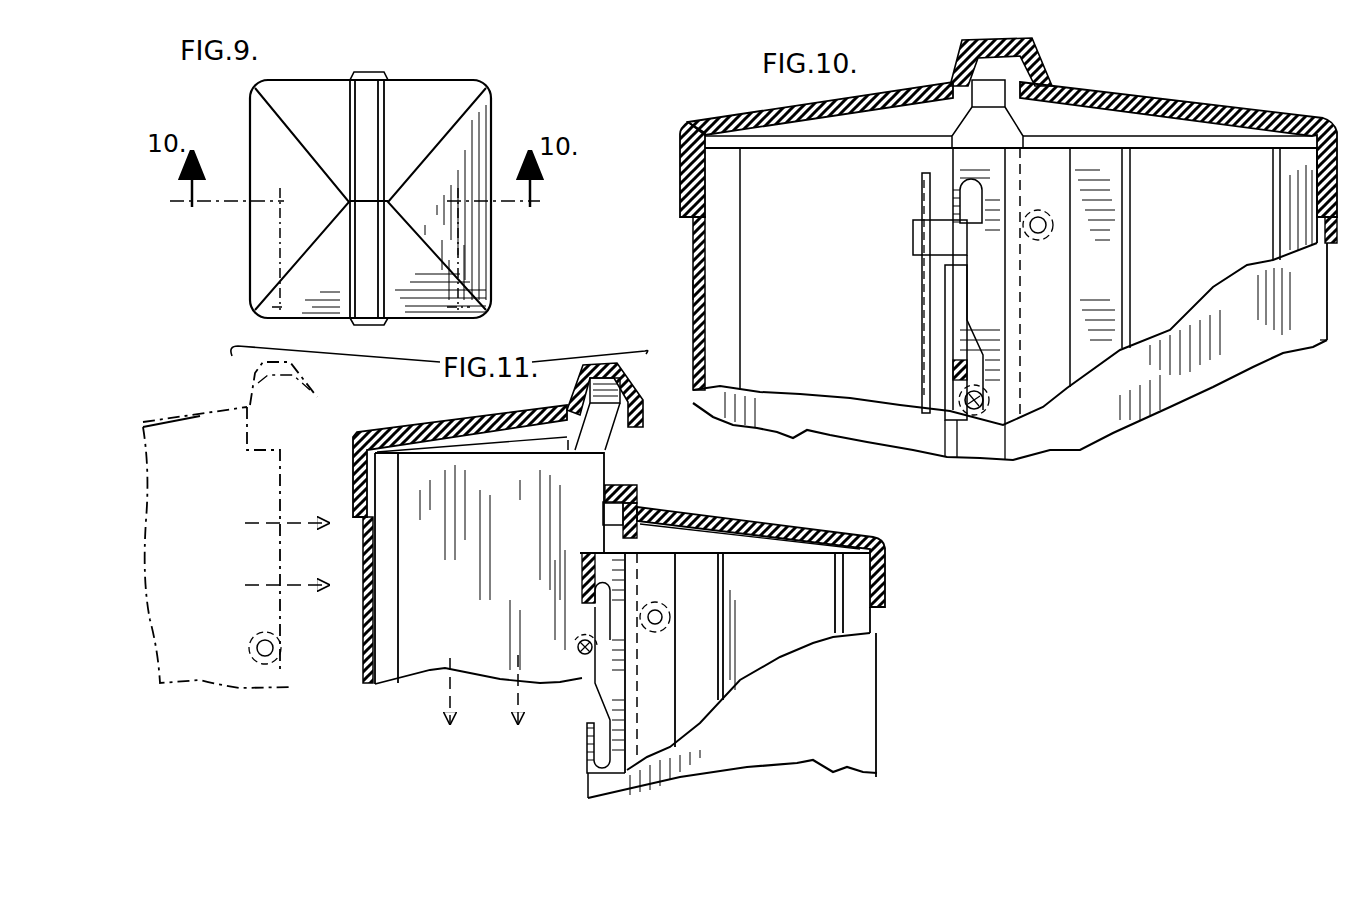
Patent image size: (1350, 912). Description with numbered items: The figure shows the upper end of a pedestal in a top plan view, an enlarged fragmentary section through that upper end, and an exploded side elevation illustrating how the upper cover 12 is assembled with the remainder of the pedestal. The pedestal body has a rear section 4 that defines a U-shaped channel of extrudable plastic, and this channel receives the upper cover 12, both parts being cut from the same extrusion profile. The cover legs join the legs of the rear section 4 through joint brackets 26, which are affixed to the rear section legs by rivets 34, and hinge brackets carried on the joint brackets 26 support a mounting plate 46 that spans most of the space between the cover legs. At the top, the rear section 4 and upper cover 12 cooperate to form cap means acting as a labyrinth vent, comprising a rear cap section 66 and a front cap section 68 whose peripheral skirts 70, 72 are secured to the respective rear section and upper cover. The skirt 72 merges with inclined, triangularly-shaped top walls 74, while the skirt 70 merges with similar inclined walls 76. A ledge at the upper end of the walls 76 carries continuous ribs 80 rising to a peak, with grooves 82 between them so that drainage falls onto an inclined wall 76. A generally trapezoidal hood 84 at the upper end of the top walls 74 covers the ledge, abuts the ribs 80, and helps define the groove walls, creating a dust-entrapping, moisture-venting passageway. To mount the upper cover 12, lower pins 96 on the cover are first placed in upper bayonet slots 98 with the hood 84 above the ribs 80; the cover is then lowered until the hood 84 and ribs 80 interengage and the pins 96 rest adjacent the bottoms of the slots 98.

In FIG. 10, the rear section 4 is at (1248, 353).
In FIG. 11, the rear section 4 is at (877, 673).
In FIG. 10, the upper cover 12 is at (692, 278).
In FIG. 11, the upper cover 12 is at (230, 686).
In FIG. 10, the joint brackets 26 is at (945, 170).
In FIG. 11, the joint brackets 26 is at (583, 588).
In FIG. 10, the rivets 34 is at (1038, 233).
In FIG. 10, the mounting plate 46 is at (922, 291).
In FIG. 10, the rear cap section 66 is at (991, 194).
In FIG. 10, the front cap section 68 is at (735, 103).
In FIG. 11, the front cap section 68 is at (200, 402).
In FIG. 10, the peripheral skirt 70 is at (1322, 200).
In FIG. 10, the peripheral skirt 72 is at (680, 166).
In FIG. 9, the top walls 74 is at (318, 92).
In FIG. 10, the top walls 74 is at (799, 99).
In FIG. 11, the top walls 74 is at (442, 428).
In FIG. 9, the inclined walls 76 is at (445, 112).
In FIG. 10, the inclined walls 76 is at (1263, 115).
In FIG. 11, the inclined walls 76 is at (802, 526).
In FIG. 10, the ribs 80 is at (965, 41).
In FIG. 11, the ribs 80 is at (622, 482).
In FIG. 10, the grooves 82 is at (993, 88).
In FIG. 10, the hood 84 is at (948, 66).
In FIG. 11, the hood 84 is at (322, 390).
In FIG. 10, the lower pins 96 is at (960, 396).
In FIG. 11, the lower pins 96 is at (272, 660).
In FIG. 10, the bayonet slots 98 is at (953, 362).
In FIG. 11, the bayonet slots 98 is at (592, 750).